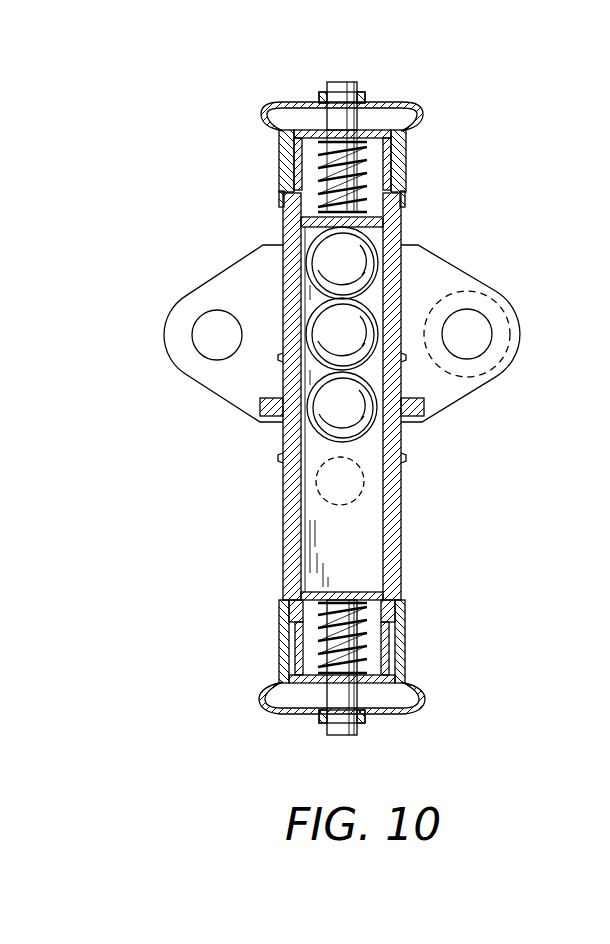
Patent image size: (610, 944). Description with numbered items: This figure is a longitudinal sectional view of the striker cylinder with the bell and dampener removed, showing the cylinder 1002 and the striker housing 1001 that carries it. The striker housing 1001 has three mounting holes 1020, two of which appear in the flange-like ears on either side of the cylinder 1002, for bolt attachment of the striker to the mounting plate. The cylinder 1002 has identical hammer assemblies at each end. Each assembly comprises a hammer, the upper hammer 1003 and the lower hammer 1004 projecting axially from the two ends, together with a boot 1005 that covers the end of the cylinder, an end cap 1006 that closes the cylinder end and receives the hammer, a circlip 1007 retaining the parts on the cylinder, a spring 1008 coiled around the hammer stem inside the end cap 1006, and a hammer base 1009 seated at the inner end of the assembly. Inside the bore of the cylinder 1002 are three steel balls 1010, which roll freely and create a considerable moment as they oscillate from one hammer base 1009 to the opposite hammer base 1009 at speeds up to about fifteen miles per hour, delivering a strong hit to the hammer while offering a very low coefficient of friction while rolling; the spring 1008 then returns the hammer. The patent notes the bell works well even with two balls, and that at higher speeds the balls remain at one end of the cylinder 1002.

The striker housing 1001 is at (442, 394).
The cylinder 1002 is at (398, 480).
The hammer 1003 is at (357, 82).
The hammer 1004 is at (350, 735).
The boot 1005 is at (420, 117).
The end cap 1006 is at (398, 147).
The circlip 1007 is at (306, 130).
The spring 1008 is at (290, 180).
The hammer base 1009 is at (292, 235).
The steel balls 1010 is at (357, 345).
The mounting holes 1020 is at (470, 330).